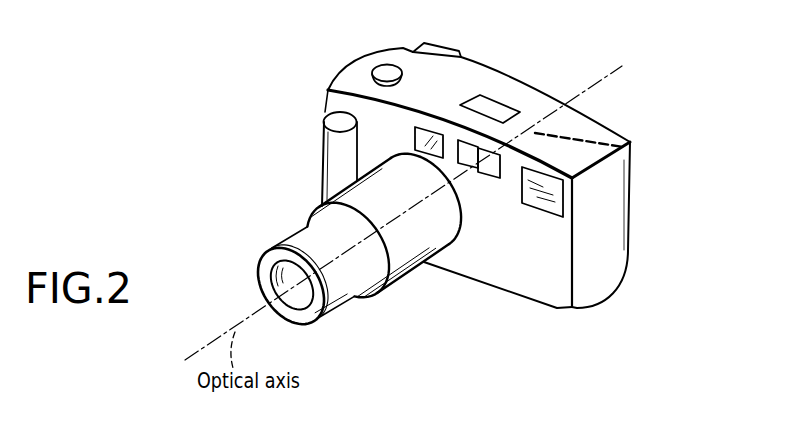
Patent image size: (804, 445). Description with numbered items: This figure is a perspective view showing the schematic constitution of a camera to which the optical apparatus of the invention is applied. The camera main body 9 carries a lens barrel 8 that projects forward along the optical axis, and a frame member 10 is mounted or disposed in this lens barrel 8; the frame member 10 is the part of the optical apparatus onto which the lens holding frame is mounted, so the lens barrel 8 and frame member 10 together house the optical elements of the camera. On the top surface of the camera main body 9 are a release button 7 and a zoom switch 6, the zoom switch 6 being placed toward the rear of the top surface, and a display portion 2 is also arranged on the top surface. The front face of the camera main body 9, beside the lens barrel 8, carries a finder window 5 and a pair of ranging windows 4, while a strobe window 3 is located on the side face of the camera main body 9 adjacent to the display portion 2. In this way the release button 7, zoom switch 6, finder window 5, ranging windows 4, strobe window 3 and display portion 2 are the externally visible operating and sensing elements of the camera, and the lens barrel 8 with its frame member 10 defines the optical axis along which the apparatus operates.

The display portion 2 is at (493, 106).
The strobe window 3 is at (558, 198).
The ranging windows 4 is at (470, 158).
The finder window 5 is at (413, 133).
The zoom switch 6 is at (430, 46).
The release button 7 is at (380, 67).
The lens barrel 8 is at (405, 263).
The camera main body 9 is at (628, 248).
The frame member 10 is at (340, 299).